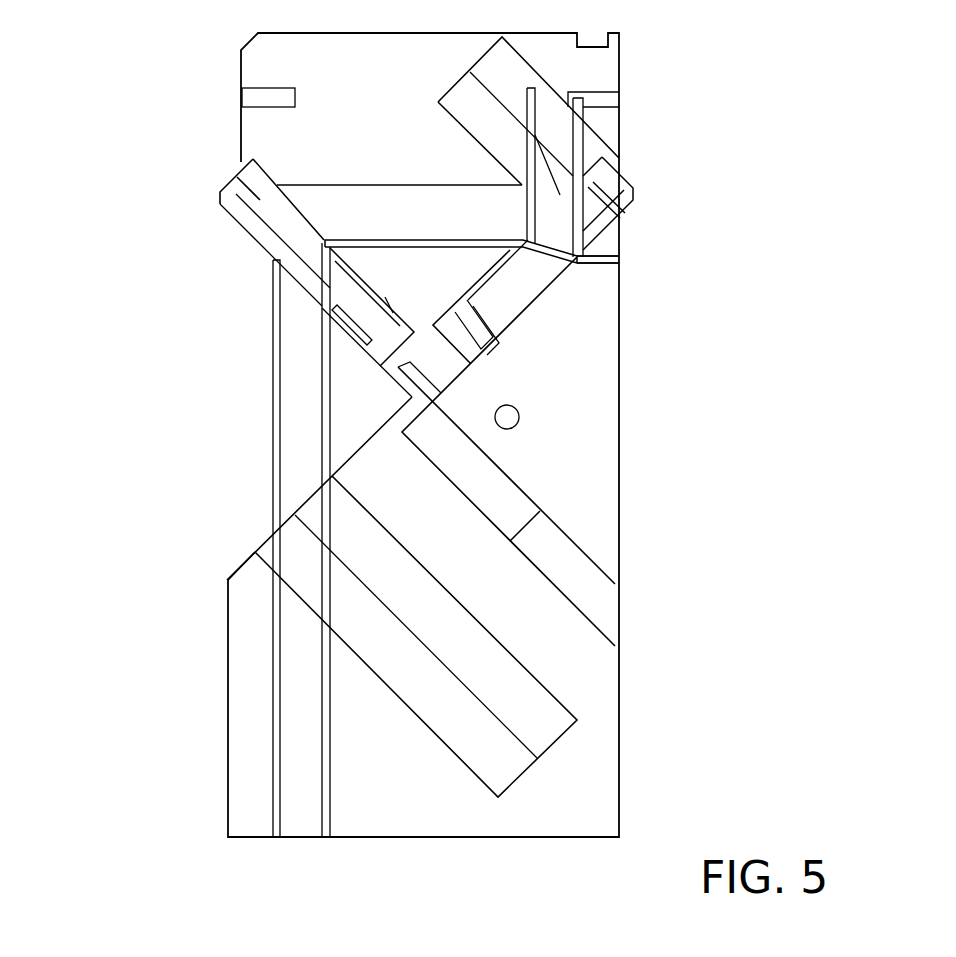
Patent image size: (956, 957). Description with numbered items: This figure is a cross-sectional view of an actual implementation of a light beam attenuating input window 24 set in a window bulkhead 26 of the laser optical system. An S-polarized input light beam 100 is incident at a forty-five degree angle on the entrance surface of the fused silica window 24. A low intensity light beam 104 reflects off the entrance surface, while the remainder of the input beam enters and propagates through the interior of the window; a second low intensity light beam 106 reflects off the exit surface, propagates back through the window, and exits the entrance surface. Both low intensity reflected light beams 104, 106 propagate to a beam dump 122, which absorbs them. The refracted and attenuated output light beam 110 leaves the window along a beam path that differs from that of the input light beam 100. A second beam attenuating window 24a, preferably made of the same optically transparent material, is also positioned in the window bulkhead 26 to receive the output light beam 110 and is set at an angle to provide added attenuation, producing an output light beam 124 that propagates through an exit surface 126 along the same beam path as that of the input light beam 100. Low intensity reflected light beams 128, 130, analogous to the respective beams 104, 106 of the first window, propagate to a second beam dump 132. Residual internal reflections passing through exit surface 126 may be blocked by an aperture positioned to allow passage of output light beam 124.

The beam attenuating input window 24 is at (265, 222).
The second beam attenuating window 24a is at (502, 305).
The window bulkhead 26 is at (578, 812).
The input light beam 100 is at (275, 259).
The low intensity light beam 104 is at (272, 382).
The low intensity light beam 106 is at (328, 197).
The output light beam 110 is at (398, 245).
The beam dump 122 is at (406, 683).
The output light beam 124 is at (625, 259).
The exit surface 126 is at (540, 285).
The low intensity reflected light beam 128 is at (520, 137).
The low intensity reflected light beam 130 is at (580, 134).
The beam dump 132 is at (490, 69).